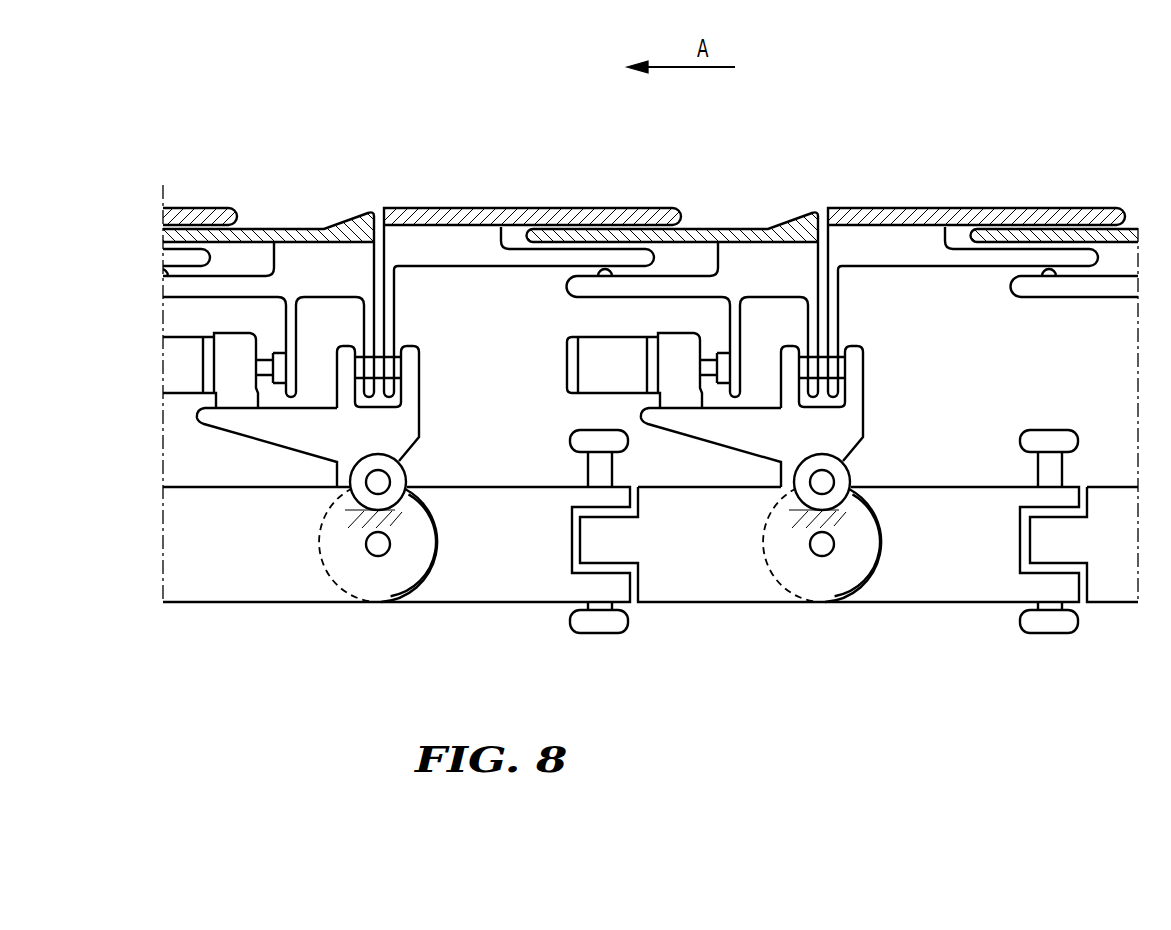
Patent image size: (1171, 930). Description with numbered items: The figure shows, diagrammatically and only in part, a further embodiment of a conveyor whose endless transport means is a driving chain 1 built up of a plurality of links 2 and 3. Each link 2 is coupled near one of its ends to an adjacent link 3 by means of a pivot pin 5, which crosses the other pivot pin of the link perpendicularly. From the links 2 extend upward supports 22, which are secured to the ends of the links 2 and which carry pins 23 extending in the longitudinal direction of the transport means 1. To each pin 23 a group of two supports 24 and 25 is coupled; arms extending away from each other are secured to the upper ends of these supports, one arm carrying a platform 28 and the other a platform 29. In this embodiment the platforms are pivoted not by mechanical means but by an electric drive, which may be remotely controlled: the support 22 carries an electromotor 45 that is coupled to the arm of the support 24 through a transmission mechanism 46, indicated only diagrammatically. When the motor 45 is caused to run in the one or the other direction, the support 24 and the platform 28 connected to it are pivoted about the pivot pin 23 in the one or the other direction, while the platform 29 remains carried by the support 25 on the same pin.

The driving chain 1 is at (650, 565).
The link 2 is at (725, 583).
The link 3 is at (500, 585).
The pivot pin 5 is at (598, 458).
The support 22 is at (845, 403).
The pin 23 is at (825, 370).
The support 24 is at (810, 323).
The support 25 is at (834, 290).
The platform 28 is at (720, 228).
The platform 29 is at (577, 214).
The electromotor 45 is at (588, 334).
The transmission mechanism 46 is at (725, 353).